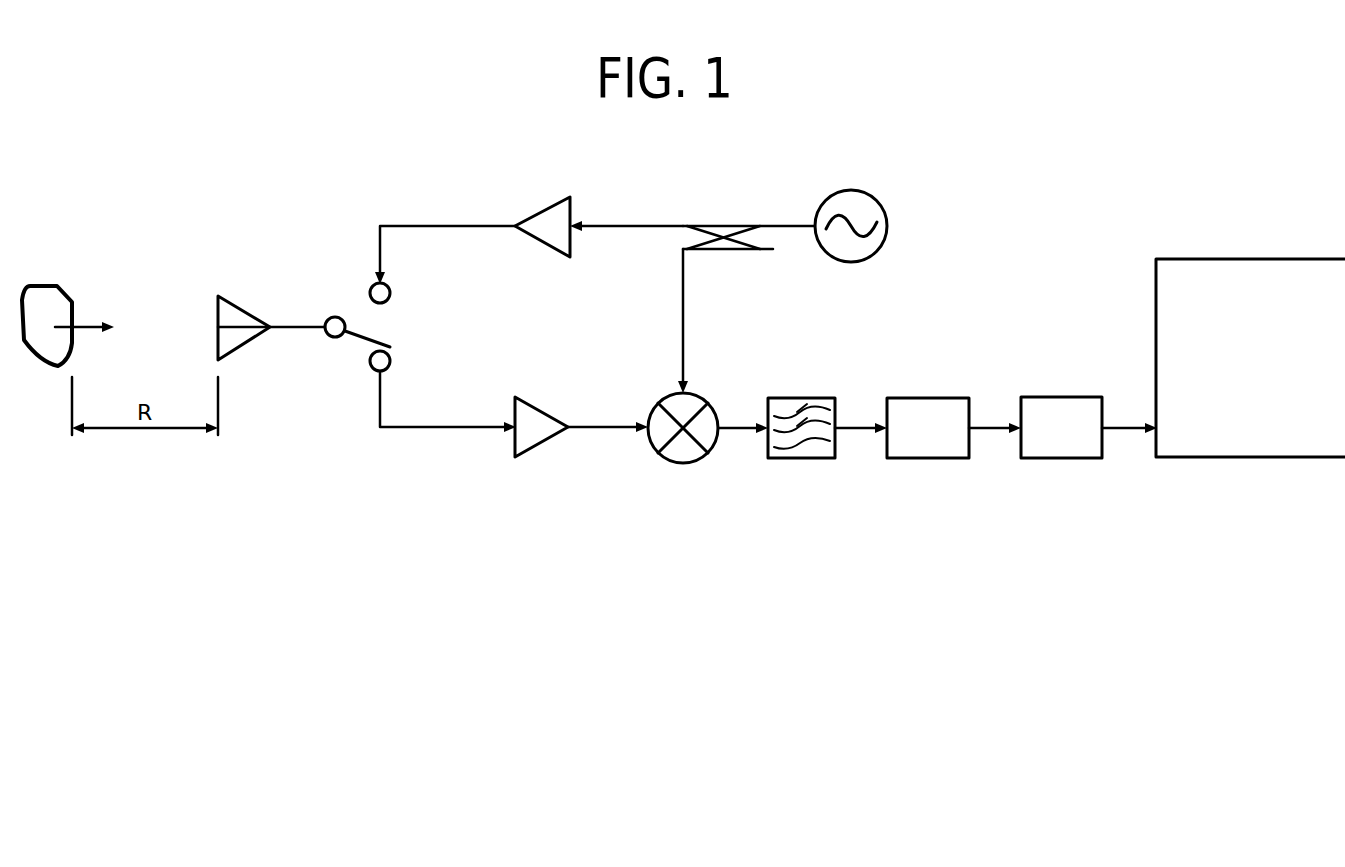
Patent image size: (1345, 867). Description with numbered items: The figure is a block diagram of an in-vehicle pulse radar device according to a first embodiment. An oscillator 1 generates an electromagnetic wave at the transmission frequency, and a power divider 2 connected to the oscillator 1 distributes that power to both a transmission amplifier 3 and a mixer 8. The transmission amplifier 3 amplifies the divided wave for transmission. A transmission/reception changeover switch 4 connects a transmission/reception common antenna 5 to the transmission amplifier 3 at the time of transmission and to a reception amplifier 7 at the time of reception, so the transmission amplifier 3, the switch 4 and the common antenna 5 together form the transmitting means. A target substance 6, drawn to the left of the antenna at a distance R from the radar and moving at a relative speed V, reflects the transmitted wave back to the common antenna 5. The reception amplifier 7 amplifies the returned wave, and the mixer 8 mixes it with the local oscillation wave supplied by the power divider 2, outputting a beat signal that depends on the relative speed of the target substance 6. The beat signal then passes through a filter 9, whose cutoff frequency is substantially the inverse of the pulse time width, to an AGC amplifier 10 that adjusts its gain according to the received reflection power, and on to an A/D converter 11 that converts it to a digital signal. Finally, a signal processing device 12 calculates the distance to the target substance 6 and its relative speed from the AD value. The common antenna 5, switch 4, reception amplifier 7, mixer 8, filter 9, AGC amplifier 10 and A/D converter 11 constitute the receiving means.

The oscillator 1 is at (850, 190).
The power divider 2 is at (718, 226).
The transmission amplifier 3 is at (566, 196).
The transmission/reception changeover switch 4 is at (388, 343).
The transmission/reception common antenna 5 is at (238, 296).
The target substance 6 is at (48, 287).
The reception amplifier 7 is at (533, 458).
The mixer 8 is at (683, 464).
The filter 9 is at (810, 459).
The AGC amplifier 10 is at (942, 459).
The A/D converter 11 is at (1078, 459).
The signal processing device 12 is at (1323, 259).